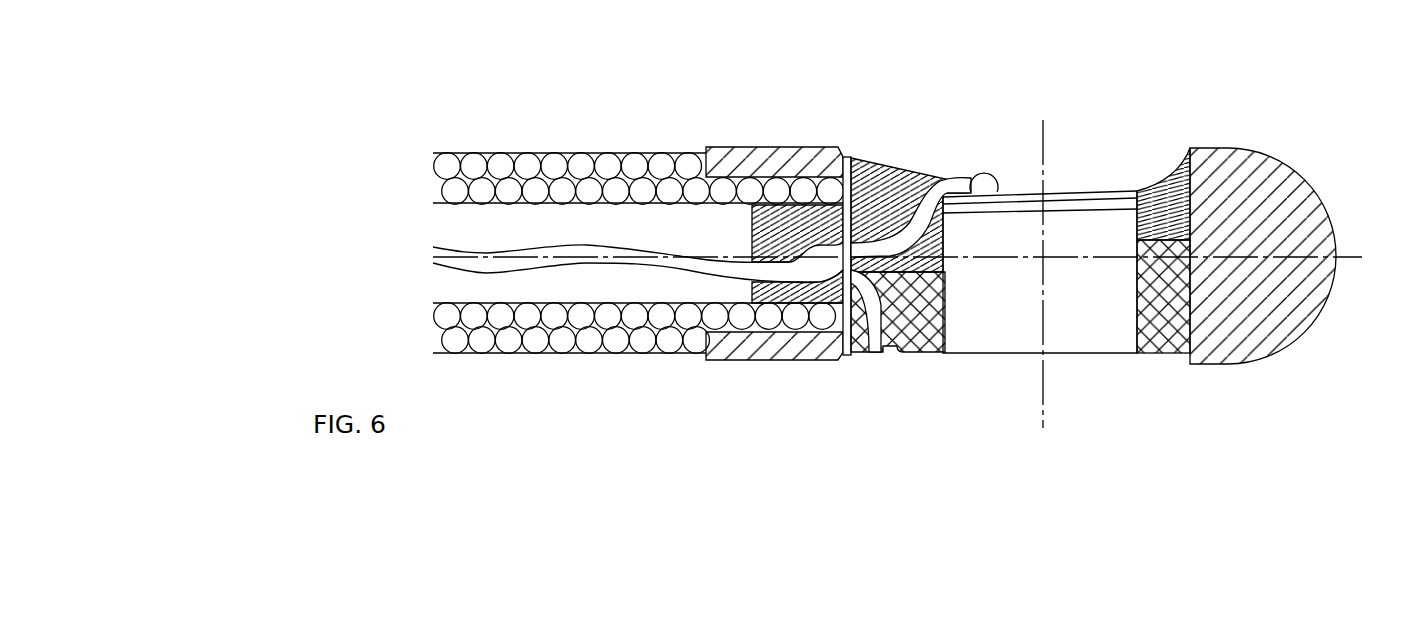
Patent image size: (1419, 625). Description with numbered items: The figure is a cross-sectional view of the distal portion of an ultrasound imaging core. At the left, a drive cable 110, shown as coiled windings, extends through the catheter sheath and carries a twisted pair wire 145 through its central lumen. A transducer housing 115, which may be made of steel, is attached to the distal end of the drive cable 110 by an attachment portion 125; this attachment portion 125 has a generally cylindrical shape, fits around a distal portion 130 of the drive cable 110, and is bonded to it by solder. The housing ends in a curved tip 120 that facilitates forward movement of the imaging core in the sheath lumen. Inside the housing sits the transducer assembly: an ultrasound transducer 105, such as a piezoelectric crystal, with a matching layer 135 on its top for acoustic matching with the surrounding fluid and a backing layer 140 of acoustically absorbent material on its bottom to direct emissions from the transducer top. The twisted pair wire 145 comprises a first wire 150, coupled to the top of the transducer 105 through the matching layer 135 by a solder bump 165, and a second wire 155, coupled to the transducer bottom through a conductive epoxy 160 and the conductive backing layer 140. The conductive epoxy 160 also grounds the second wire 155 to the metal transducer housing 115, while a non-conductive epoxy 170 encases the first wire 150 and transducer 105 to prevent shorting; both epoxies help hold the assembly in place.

The ultrasound transducer 105 is at (1088, 197).
The drive cable 110 is at (472, 355).
The transducer housing 115 is at (1227, 135).
The curved tip 120 is at (1257, 178).
The attachment portion 125 is at (737, 152).
The distal portion of the drive cable 130 is at (770, 173).
The matching layer 135 is at (1076, 197).
The backing layer 140 is at (1085, 322).
The twisted pair wire 145 is at (697, 277).
The first wire 150 is at (907, 197).
The second wire 155 is at (875, 348).
The conductive epoxy 160 is at (928, 355).
The solder bump 165 is at (983, 168).
The non-conductive epoxy 170 is at (929, 173).